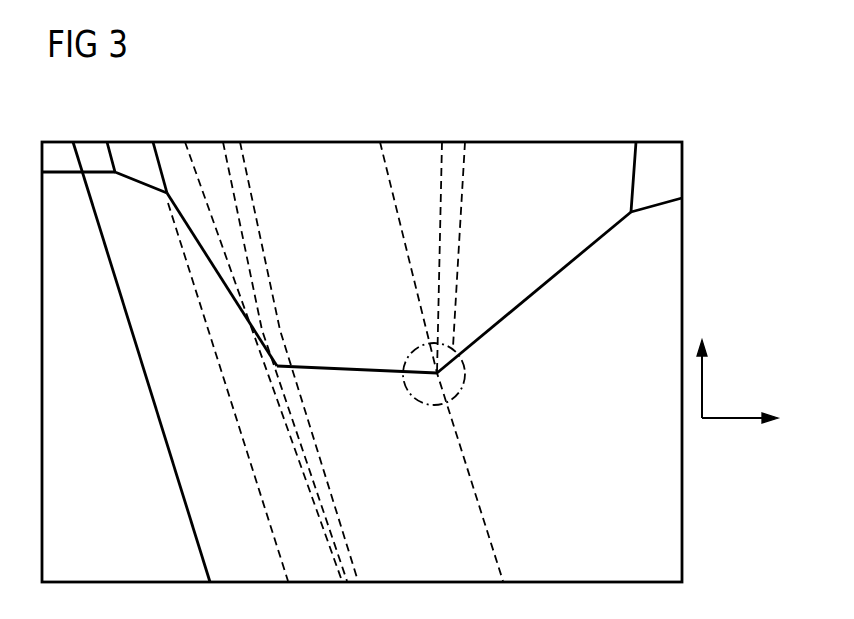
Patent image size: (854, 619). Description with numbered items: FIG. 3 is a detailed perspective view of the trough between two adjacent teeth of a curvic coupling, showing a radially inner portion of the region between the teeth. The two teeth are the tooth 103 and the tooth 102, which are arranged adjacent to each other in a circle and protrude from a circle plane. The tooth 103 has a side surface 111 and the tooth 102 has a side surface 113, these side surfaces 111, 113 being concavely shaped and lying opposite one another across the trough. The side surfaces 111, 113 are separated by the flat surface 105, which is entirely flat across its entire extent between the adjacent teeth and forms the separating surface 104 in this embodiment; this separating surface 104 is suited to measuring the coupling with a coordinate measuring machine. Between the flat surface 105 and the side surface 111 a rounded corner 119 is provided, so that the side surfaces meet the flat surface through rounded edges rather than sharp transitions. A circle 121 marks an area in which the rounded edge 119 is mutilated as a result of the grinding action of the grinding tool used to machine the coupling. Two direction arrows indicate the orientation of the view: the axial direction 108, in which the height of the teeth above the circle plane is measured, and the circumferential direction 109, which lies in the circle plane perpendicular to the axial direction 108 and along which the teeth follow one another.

The tooth 102 is at (657, 150).
The tooth 103 is at (135, 152).
The separating surface 104 is at (352, 348).
The flat surface 105 is at (327, 155).
The axial direction 108 is at (702, 383).
The circumferential direction 109 is at (732, 420).
The side surface 111 is at (223, 204).
The side surface 113 is at (565, 168).
The rounded corner 119 is at (260, 266).
The circle 121 is at (465, 371).